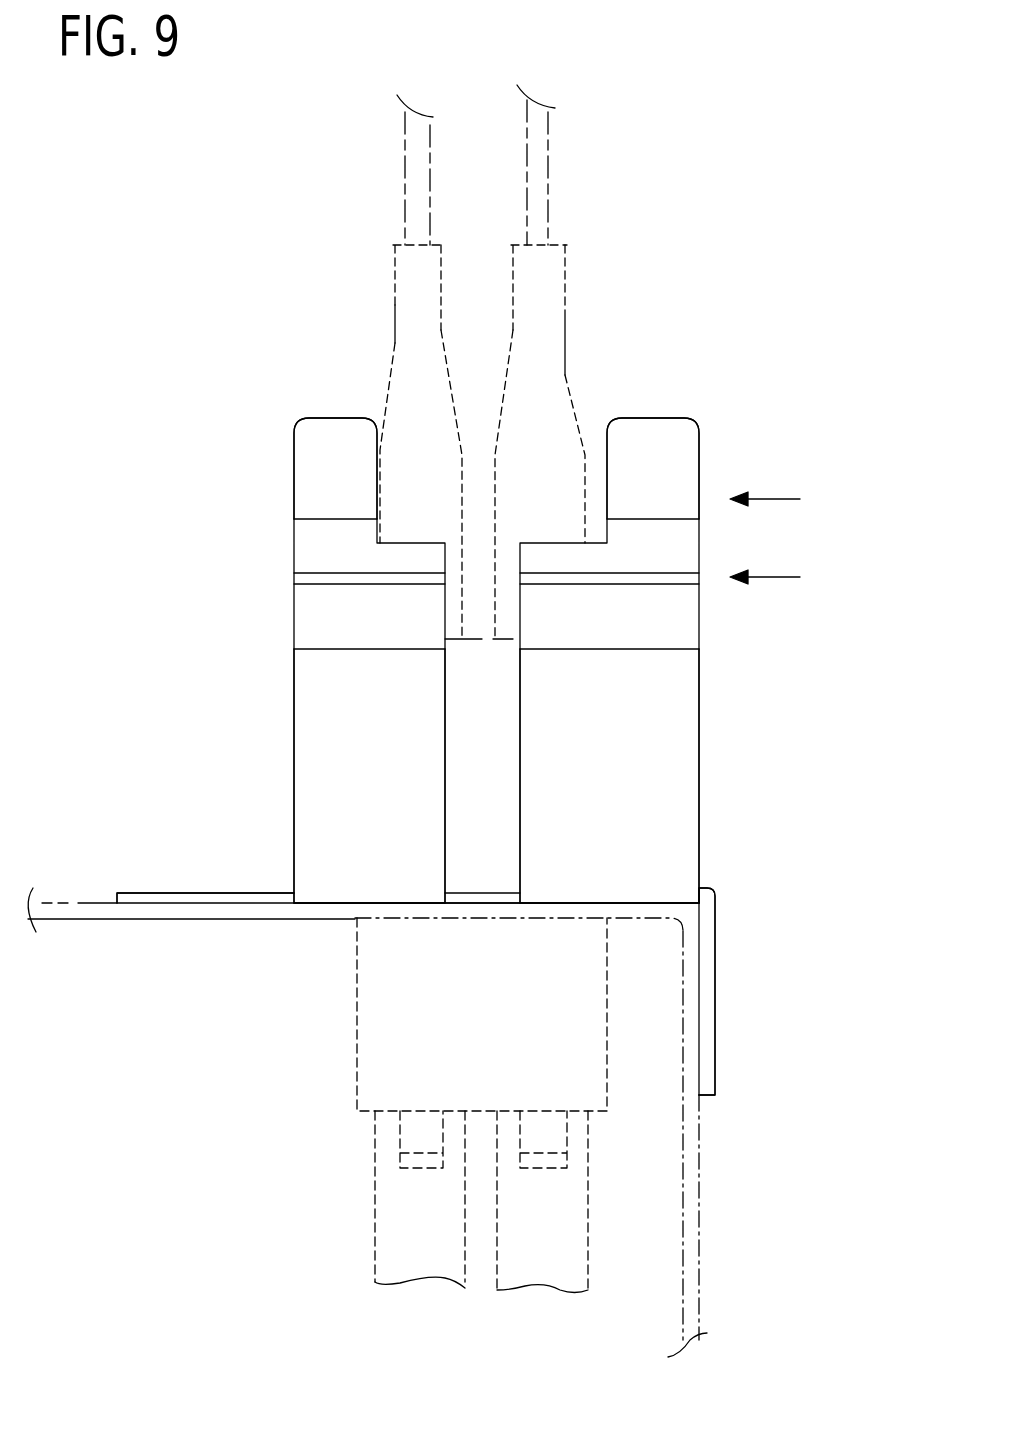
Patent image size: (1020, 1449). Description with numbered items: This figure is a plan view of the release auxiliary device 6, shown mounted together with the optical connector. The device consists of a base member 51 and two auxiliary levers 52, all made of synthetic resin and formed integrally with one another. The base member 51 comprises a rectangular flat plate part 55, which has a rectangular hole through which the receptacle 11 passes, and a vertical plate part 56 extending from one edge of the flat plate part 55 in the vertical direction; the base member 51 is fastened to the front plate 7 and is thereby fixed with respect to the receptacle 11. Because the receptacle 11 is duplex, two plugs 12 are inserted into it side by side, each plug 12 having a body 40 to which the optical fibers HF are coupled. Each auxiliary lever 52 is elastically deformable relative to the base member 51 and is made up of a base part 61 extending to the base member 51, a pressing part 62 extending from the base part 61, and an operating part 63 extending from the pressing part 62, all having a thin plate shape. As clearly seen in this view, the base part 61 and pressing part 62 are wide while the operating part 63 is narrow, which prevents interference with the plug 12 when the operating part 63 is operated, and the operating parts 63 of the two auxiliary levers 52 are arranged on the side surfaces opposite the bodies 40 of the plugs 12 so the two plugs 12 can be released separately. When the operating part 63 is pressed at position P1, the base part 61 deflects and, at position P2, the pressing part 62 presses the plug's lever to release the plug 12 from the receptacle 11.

The optical fibers HF is at (549, 133).
The plug 12 is at (392, 312).
The body 40 is at (405, 402).
The release auxiliary device 6 is at (812, 307).
The auxiliary lever 52 is at (293, 805).
The base part 61 is at (305, 727).
The pressing part 62 is at (295, 575).
The operating part 63 is at (305, 455).
The position P1 is at (790, 500).
The position P2 is at (790, 578).
The base member 51 is at (416, 991).
The flat plate part 55 is at (140, 893).
The vertical plate part 56 is at (715, 1022).
The receptacle 11 is at (357, 1032).
The front plate 7 is at (700, 1200).